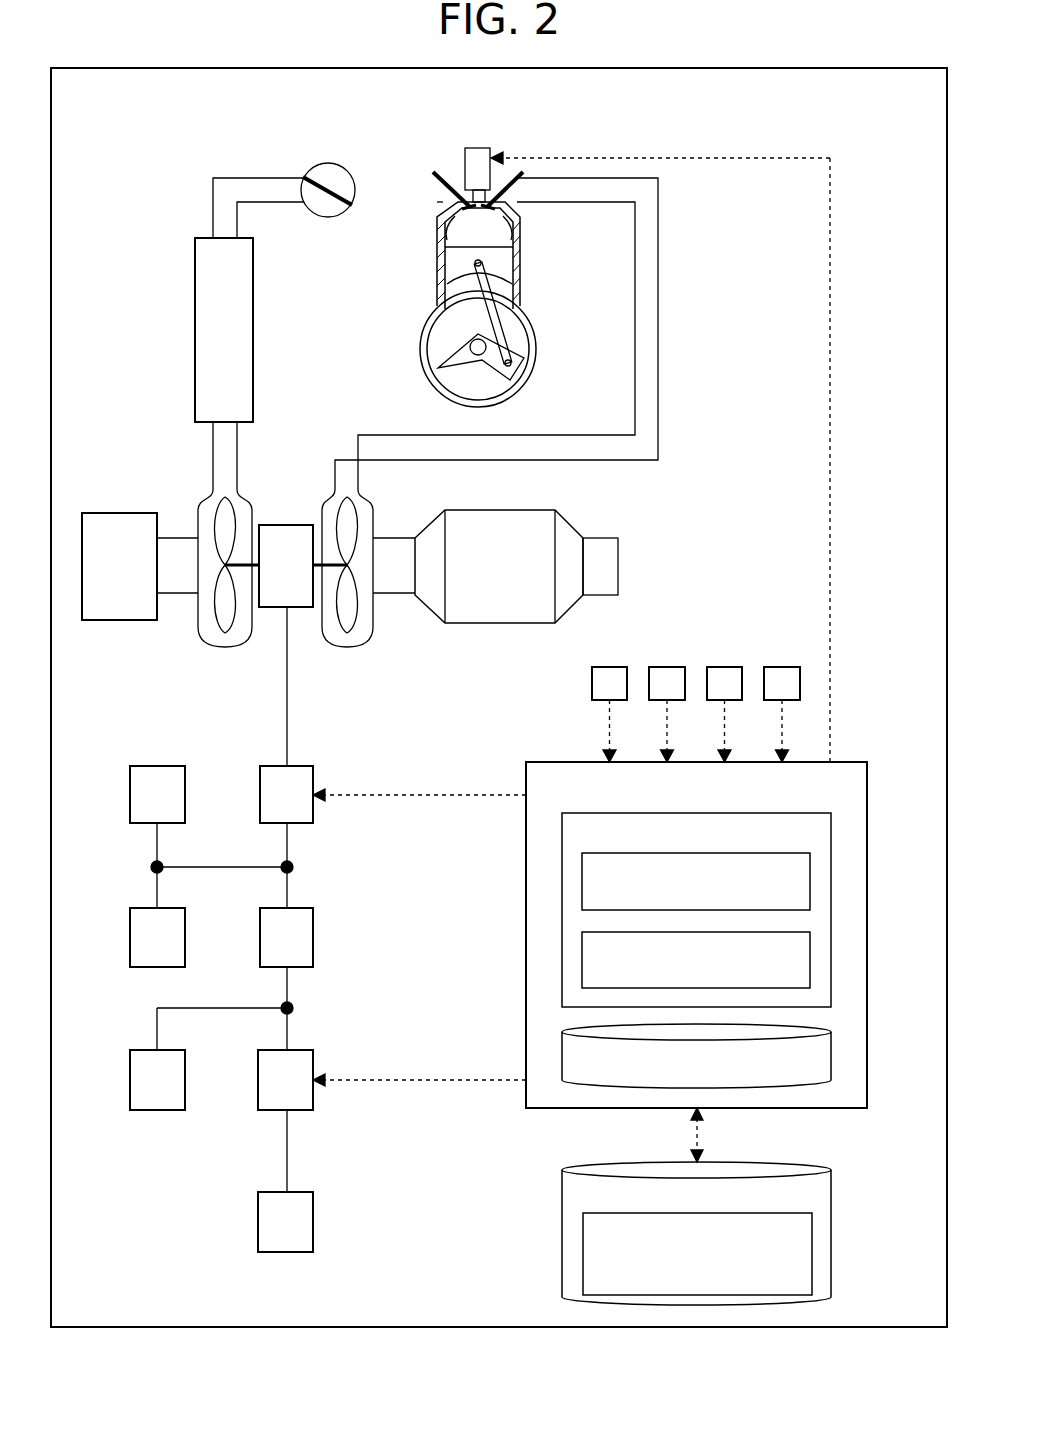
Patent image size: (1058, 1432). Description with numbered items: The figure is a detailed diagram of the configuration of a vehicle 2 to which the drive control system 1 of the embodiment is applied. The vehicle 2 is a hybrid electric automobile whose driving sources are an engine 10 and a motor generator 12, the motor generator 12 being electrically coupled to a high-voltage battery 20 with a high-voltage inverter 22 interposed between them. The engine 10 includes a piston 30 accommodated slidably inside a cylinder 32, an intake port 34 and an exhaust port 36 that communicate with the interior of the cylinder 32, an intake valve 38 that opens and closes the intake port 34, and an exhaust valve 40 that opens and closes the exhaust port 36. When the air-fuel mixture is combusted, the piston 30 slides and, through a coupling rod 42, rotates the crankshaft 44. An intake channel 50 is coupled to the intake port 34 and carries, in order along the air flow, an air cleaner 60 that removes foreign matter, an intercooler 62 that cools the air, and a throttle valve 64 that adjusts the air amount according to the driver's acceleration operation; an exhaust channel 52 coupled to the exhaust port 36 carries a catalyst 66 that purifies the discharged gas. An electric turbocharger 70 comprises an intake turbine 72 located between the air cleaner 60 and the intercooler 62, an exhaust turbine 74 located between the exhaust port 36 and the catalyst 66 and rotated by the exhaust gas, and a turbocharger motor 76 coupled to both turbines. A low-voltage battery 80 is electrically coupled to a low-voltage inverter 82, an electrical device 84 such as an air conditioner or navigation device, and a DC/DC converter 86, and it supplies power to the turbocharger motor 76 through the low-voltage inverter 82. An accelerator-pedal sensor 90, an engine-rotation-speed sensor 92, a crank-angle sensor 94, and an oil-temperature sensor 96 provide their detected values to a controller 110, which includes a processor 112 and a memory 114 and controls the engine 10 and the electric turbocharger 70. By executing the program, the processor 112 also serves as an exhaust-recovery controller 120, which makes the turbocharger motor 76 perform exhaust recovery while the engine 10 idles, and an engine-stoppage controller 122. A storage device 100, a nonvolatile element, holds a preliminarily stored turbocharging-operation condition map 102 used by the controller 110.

The drive control system 1 is at (93, 166).
The vehicle 2 is at (264, 68).
The engine 10 is at (436, 290).
The motor generator 12 is at (257, 1225).
The high-voltage battery 20 is at (129, 1082).
The high-voltage inverter 22 is at (300, 1049).
The piston 30 is at (510, 276).
The cylinder 32 is at (522, 292).
The intake port 34 is at (448, 200).
The exhaust port 36 is at (512, 200).
The intake valve 38 is at (447, 232).
The exhaust valve 40 is at (510, 232).
The coupling rod 42 is at (506, 330).
The crankshaft 44 is at (505, 392).
The intake channel 50 is at (212, 446).
The exhaust channel 52 is at (370, 434).
The air cleaner 60 is at (120, 512).
The intercooler 62 is at (194, 332).
The throttle valve 64 is at (316, 170).
The catalyst 66 is at (492, 626).
The electric turbocharger 70 is at (288, 528).
The intake turbine 72 is at (210, 636).
The exhaust turbine 74 is at (362, 636).
The turbocharger motor 76 is at (284, 524).
The low-voltage battery 80 is at (129, 939).
The low-voltage inverter 82 is at (300, 765).
The electrical device 84 is at (129, 797).
The DC/DC converter 86 is at (300, 907).
The accelerator-pedal sensor 90 is at (609, 666).
The engine-rotation-speed sensor 92 is at (667, 666).
The crank-angle sensor 94 is at (724, 666).
The oil-temperature sensor 96 is at (782, 666).
The storage device 100 is at (745, 1233).
The turbocharging-operation condition map 102 is at (813, 1250).
The controller 110 is at (622, 657).
The processor 112 is at (746, 910).
The memory 114 is at (832, 1055).
The exhaust-recovery controller 120 is at (811, 880).
The engine-stoppage controller 122 is at (811, 955).